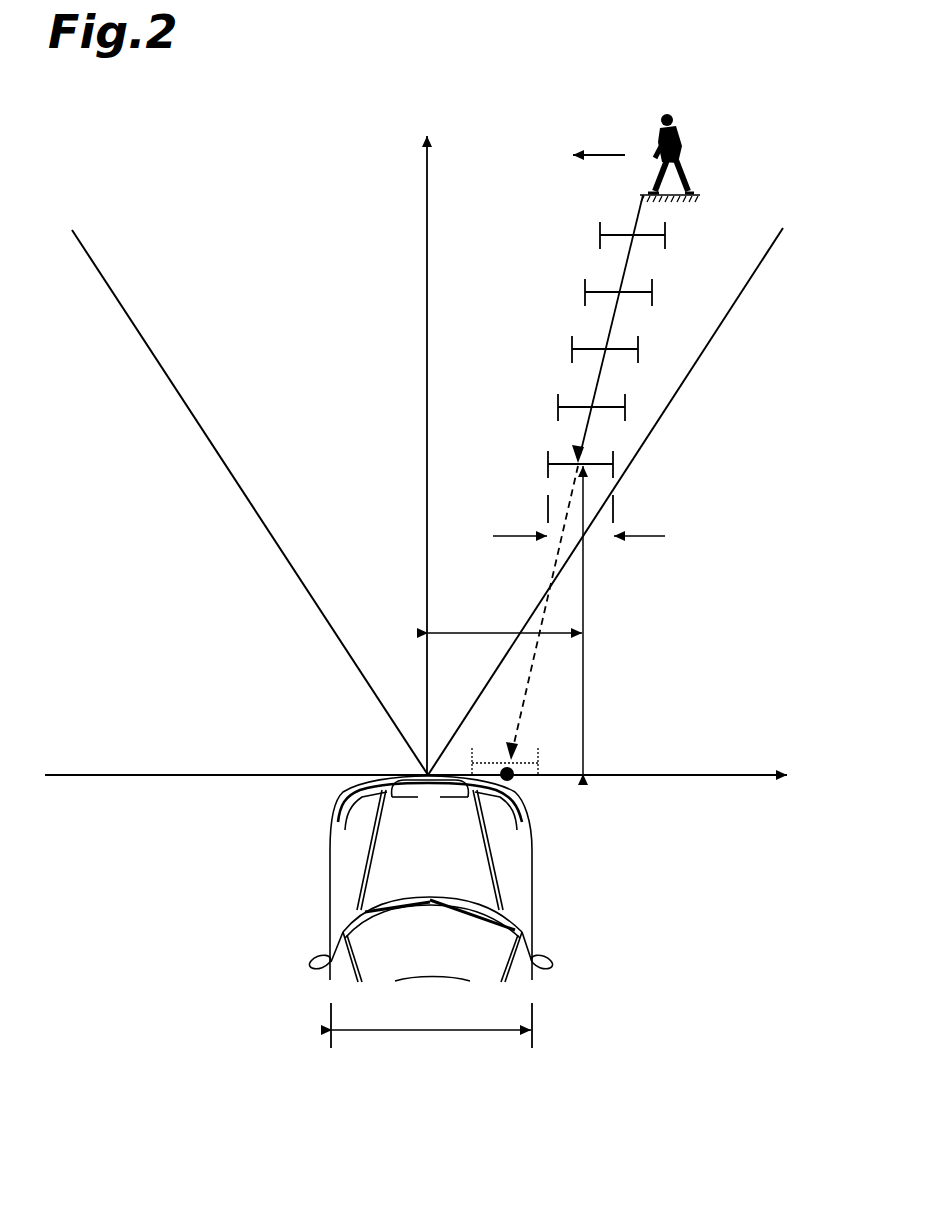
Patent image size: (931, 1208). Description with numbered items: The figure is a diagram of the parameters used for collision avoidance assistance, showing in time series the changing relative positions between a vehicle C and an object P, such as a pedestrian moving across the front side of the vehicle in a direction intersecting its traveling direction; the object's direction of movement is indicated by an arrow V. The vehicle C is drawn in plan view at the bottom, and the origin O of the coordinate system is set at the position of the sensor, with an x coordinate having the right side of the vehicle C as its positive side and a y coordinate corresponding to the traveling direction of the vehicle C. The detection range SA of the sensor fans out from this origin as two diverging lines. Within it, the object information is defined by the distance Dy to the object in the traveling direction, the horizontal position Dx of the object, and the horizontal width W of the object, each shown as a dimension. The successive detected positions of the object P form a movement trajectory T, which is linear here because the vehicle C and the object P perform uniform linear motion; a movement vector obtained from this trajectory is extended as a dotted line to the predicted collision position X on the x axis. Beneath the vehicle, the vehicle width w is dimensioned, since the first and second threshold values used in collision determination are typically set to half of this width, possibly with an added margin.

The vehicle C is at (533, 890).
The object P is at (681, 133).
The pedestrian moving velocity V is at (606, 155).
The movement trajectory T is at (615, 318).
The detection range SA is at (686, 382).
The horizontal width W is at (579, 515).
The horizontal position Dx is at (487, 632).
The distance Dy is at (585, 657).
The predicted collision position X is at (513, 780).
The origin O is at (428, 795).
The vehicle width w is at (433, 1032).
The x coordinate x is at (429, 775).
The y coordinate y is at (435, 442).